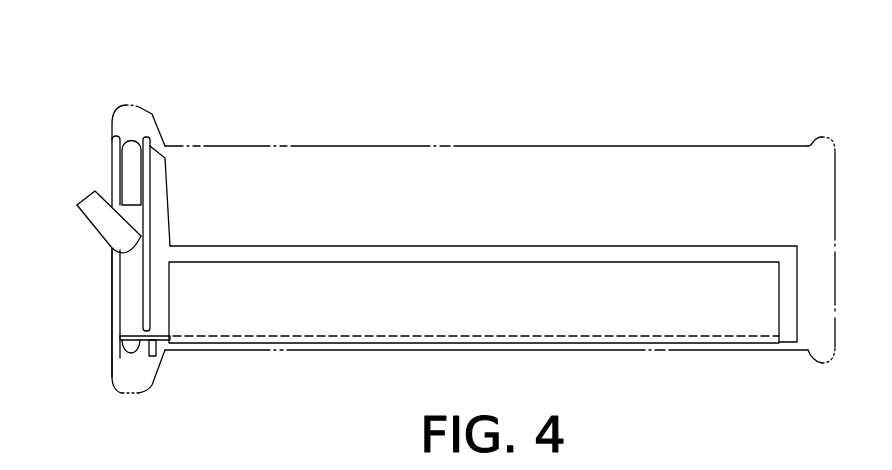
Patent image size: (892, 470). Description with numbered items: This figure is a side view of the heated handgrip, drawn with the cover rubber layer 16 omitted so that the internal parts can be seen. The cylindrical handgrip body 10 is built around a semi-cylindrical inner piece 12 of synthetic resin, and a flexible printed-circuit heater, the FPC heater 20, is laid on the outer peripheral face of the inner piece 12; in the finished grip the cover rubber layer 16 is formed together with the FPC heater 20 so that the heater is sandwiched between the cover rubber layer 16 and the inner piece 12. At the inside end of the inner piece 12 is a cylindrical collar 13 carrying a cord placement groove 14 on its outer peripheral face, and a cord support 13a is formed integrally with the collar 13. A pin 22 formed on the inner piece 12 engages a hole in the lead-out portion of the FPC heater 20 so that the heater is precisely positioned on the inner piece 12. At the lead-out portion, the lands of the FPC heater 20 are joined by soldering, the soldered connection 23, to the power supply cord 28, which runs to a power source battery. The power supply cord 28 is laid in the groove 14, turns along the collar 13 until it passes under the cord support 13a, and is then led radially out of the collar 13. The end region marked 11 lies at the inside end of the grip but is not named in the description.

The handgrip body 10 is at (729, 136).
The end cap 11 is at (153, 102).
The inner piece 12 is at (632, 247).
The collar 13 is at (112, 160).
The cord support 13a is at (137, 220).
The cord placement groove 14 is at (128, 293).
The cover rubber layer 16 is at (572, 146).
The FPC heater 20 is at (472, 270).
The pin 22 is at (155, 360).
The soldered connection 23 is at (130, 357).
The power supply cord 28 is at (98, 221).